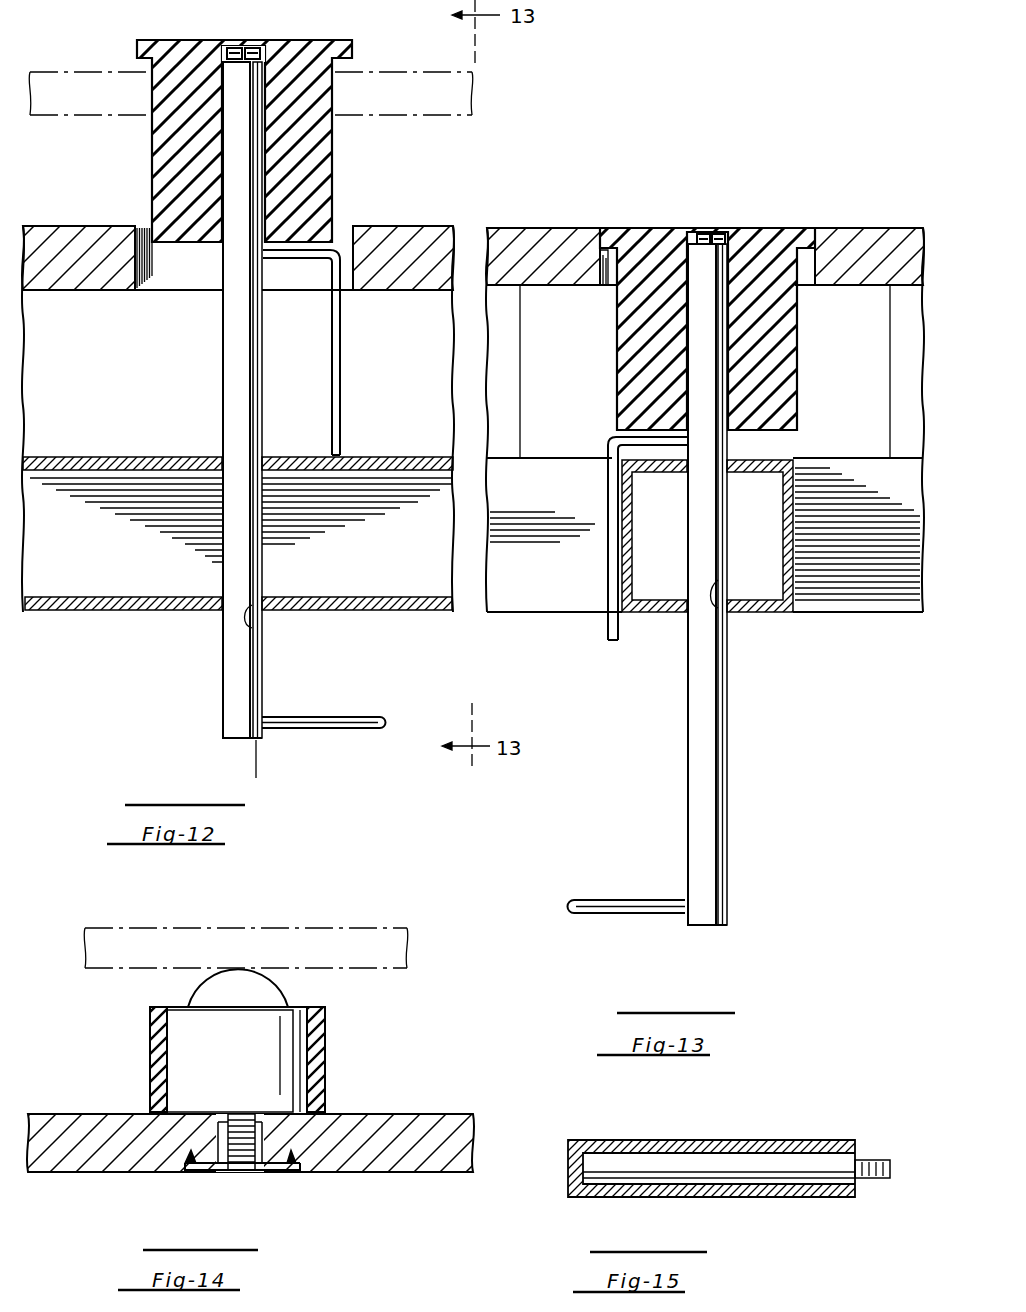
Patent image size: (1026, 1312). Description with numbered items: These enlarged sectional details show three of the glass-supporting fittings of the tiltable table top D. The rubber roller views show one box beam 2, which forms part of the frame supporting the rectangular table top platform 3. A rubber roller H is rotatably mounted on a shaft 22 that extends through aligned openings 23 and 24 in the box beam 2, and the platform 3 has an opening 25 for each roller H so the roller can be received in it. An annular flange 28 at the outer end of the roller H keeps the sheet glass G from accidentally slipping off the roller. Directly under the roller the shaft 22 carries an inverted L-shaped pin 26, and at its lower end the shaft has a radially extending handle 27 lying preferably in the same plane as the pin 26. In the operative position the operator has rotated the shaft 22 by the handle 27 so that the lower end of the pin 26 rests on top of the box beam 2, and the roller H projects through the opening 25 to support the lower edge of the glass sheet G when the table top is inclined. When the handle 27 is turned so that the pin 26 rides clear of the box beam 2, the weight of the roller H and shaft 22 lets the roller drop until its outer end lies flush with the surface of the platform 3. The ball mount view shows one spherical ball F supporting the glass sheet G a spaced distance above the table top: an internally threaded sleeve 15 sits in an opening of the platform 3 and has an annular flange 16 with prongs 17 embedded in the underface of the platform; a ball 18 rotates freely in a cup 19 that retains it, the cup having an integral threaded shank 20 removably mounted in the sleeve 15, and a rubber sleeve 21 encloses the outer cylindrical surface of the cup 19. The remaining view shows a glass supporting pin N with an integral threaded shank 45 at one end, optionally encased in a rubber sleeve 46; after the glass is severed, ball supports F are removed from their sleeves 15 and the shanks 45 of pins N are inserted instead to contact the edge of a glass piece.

In FIG. 12, the box beam 2 is at (238, 440).
In FIG. 13, the box beam 2 is at (577, 458).
In FIG. 12, the table top platform 3 is at (110, 226).
In FIG. 13, the table top platform 3 is at (560, 228).
In FIG. 14, the table top platform 3 is at (401, 1114).
In FIG. 14, the internally threaded sleeve 15 is at (215, 1123).
In FIG. 14, the annular flange 16 is at (210, 1166).
In FIG. 14, the prongs 17 is at (183, 1170).
In FIG. 14, the ball 18 is at (272, 998).
In FIG. 14, the cup 19 is at (221, 1066).
In FIG. 14, the threaded shank 20 is at (246, 1168).
In FIG. 14, the rubber sleeve 21 is at (325, 1090).
In FIG. 12, the shaft 22 is at (228, 378).
In FIG. 13, the shaft 22 is at (726, 750).
In FIG. 12, the opening 23 is at (254, 446).
In FIG. 13, the opening 23 is at (725, 472).
In FIG. 12, the opening 24 is at (255, 618).
In FIG. 13, the opening 24 is at (720, 596).
In FIG. 12, the opening 25 is at (178, 274).
In FIG. 13, the opening 25 is at (610, 270).
In FIG. 12, the inverted L-shaped pin 26 is at (331, 400).
In FIG. 13, the inverted L-shaped pin 26 is at (608, 492).
In FIG. 12, the handle 27 is at (302, 715).
In FIG. 13, the handle 27 is at (640, 900).
In FIG. 12, the annular flange 28 is at (352, 48).
In FIG. 13, the annular flange 28 is at (634, 248).
In FIG. 15, the threaded shank 45 is at (897, 1138).
In FIG. 15, the rubber sleeve 46 is at (656, 1143).
In FIG. 12, the table top D is at (203, 611).
In FIG. 14, the spherical ball F is at (274, 1059).
In FIG. 12, the sheet of glass G is at (140, 113).
In FIG. 14, the sheet of glass G is at (403, 951).
In FIG. 12, the rubber roller H is at (287, 42).
In FIG. 13, the rubber roller H is at (771, 230).
In FIG. 15, the glass supporting pin N is at (707, 1162).